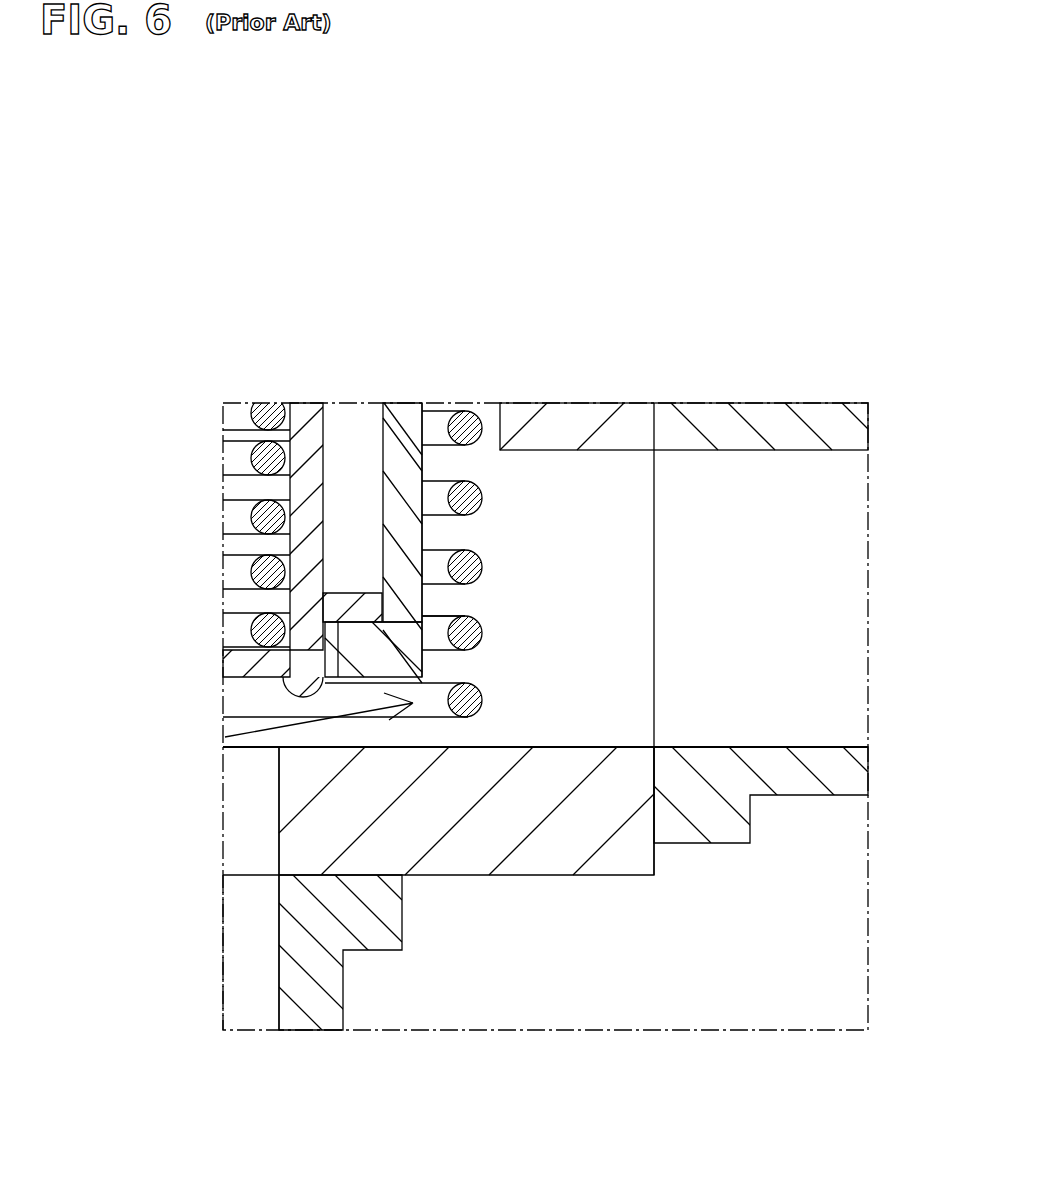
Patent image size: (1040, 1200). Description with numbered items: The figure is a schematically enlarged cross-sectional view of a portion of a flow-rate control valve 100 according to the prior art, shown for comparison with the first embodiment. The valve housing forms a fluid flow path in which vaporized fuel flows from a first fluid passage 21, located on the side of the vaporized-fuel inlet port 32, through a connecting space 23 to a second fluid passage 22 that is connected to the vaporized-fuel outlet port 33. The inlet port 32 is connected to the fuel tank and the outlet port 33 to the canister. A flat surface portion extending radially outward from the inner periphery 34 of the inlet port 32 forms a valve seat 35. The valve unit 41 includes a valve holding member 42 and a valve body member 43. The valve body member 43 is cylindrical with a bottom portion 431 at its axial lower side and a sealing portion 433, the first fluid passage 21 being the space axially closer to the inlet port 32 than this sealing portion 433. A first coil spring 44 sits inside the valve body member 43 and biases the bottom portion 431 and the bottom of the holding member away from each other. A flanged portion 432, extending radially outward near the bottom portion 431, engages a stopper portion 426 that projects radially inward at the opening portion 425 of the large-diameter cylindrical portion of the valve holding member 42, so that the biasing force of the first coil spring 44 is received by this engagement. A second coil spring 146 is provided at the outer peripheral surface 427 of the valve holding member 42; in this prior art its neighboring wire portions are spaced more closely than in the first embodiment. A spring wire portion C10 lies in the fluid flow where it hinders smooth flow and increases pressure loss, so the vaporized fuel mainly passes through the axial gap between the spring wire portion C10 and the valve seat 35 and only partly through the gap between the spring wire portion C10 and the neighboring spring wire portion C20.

The flow-rate control valve 100 is at (797, 379).
The vaporized-fuel outlet port 33 is at (840, 493).
The first coil spring 44 is at (240, 462).
The second coil spring 146 is at (468, 408).
The valve body member 43 is at (320, 405).
The flanged portion 432 is at (348, 594).
The bottom portion 431 is at (228, 658).
The sealing portion 433 is at (282, 698).
The valve holding member 42 is at (410, 424).
The outer peripheral surface 427 is at (482, 560).
The stopper portion 426 is at (427, 667).
The opening portion 425 is at (333, 683).
The neighboring spring wire portion C20 is at (353, 640).
The first fluid passage 21 is at (235, 701).
The spring wire portion C10 is at (484, 708).
The valve unit 41 is at (495, 712).
The valve seat 35 is at (416, 735).
The second fluid passage 22 is at (588, 723).
The inner periphery 34 is at (275, 741).
The connecting space 23 is at (364, 693).
The vaporized-fuel inlet port 32 is at (250, 1005).